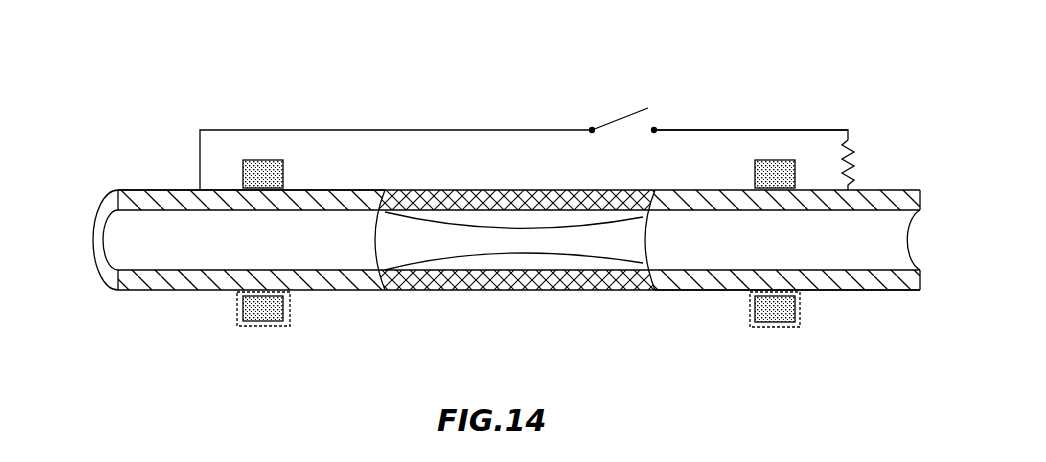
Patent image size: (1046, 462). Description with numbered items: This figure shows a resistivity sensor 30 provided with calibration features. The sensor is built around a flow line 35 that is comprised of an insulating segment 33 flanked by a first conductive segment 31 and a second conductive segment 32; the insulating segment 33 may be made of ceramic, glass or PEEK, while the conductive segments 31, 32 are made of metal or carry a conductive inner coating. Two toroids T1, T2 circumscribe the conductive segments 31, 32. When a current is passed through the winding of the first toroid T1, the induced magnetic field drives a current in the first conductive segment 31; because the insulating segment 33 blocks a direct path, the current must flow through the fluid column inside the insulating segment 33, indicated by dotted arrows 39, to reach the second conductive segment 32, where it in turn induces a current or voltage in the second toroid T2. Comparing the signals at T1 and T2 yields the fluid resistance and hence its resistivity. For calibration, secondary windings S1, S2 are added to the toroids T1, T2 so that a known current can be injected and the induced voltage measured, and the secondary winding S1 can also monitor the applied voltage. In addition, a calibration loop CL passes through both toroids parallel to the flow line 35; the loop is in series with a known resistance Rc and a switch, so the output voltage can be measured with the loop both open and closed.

The resistivity sensor 30 is at (423, 100).
The first conductive segment 31 is at (148, 292).
The second conductive segment 32 is at (866, 282).
The insulating segment 33 is at (598, 266).
The flow line 35 is at (142, 190).
The dotted arrows 39 is at (477, 255).
The first toroid T1 is at (285, 172).
The second toroid T2 is at (753, 172).
The secondary winding S1 is at (262, 326).
The secondary winding S2 is at (757, 327).
The calibration loop CL is at (740, 130).
The known resistance Rc is at (863, 165).